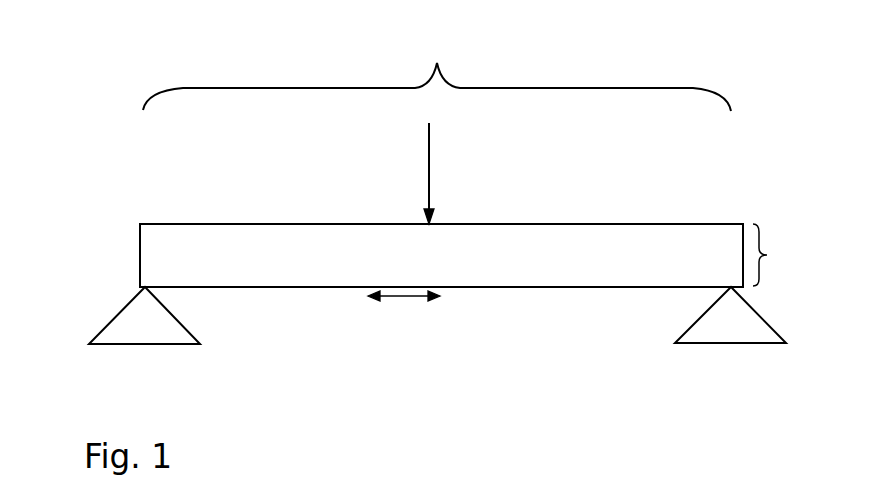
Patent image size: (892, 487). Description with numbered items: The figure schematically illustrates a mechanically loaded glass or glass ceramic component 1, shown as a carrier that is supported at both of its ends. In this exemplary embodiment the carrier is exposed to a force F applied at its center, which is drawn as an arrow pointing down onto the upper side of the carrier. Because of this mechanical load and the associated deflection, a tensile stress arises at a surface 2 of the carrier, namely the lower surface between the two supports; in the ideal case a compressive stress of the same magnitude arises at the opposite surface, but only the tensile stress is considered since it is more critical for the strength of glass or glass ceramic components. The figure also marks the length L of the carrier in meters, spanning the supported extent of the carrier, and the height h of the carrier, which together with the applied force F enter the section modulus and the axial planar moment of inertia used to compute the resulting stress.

The glass or glass ceramic component 1 is at (618, 242).
The surface 2 is at (450, 287).
The length of the carrier L is at (437, 63).
The applied force F is at (439, 170).
The height of the carrier h is at (776, 255).